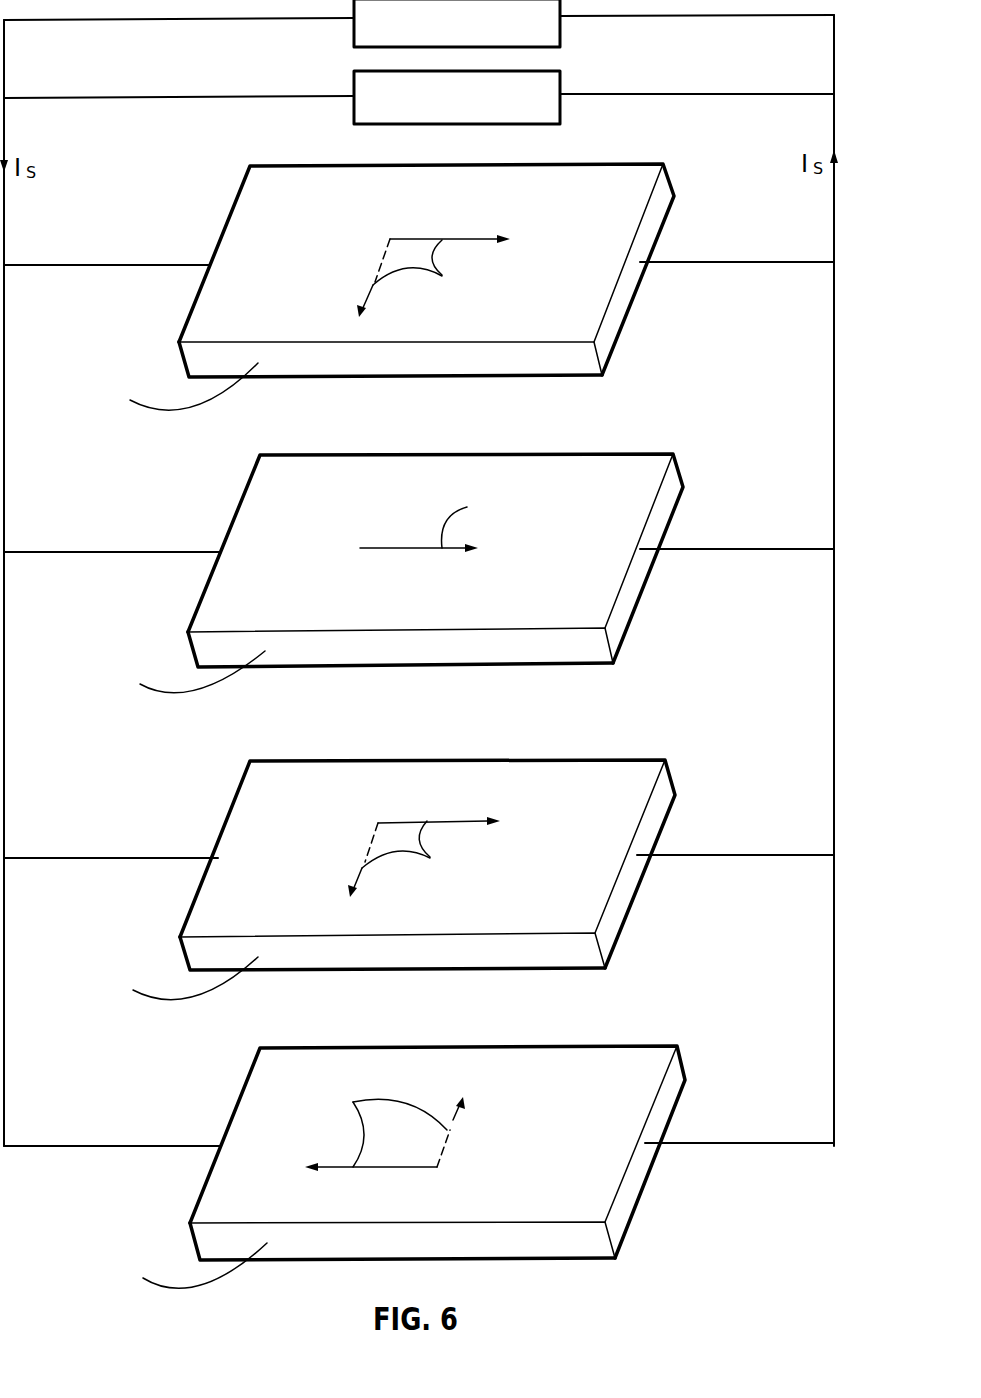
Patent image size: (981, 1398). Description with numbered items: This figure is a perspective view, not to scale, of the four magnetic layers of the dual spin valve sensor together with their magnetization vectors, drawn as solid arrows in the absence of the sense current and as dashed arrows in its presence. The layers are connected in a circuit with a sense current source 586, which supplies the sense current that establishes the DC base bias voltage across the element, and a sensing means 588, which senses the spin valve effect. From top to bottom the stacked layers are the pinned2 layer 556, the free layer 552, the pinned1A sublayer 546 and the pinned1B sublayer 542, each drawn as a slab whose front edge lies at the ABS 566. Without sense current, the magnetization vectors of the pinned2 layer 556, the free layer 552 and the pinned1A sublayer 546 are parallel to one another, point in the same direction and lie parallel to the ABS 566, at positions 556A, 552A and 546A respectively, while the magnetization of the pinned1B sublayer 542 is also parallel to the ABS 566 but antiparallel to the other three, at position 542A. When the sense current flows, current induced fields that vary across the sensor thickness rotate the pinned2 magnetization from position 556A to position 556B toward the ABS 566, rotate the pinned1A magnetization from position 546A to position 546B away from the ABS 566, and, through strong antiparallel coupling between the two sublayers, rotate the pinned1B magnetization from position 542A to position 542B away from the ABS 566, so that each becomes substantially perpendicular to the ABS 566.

The sense current source 586 is at (561, 36).
The sensing means 588 is at (561, 114).
The pinned2 layer 556 is at (385, 287).
The position of magnetization vector of pinned2 layer without sense current 556A is at (462, 238).
The position of magnetization vector of pinned2 layer with sense current 556B is at (367, 278).
The free layer 552 is at (393, 575).
The position of magnetization vector of free layer 552A is at (407, 520).
The pinned1A sublayer 546 is at (385, 880).
The position of magnetization vector of pinned1A sublayer without sense current 546A is at (458, 820).
The position of magnetization vector of pinned1A sublayer with sense current 546B is at (362, 860).
The pinned1B sublayer 542 is at (396, 1169).
The position of magnetization vector of pinned1B sublayer without sense current 542A is at (395, 1168).
The position of magnetization vector of pinned1B sublayer with sense current 542B is at (450, 1133).
The ABS 566 is at (540, 364).